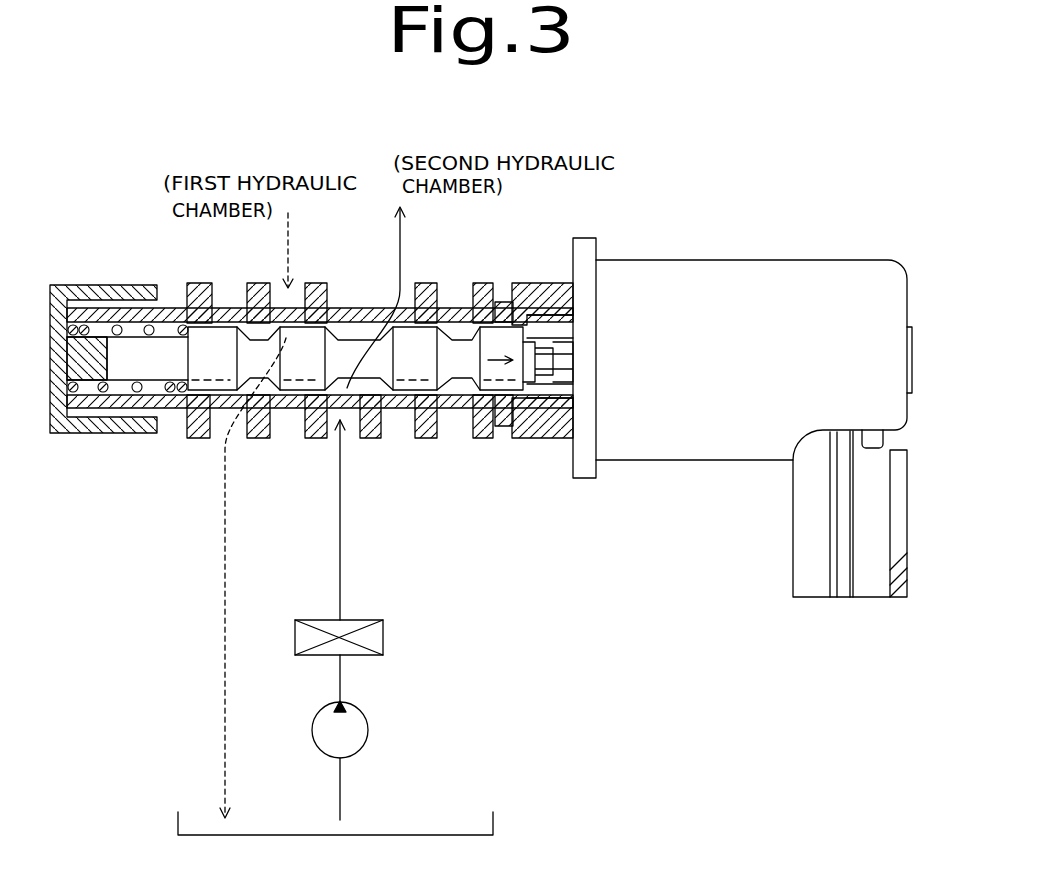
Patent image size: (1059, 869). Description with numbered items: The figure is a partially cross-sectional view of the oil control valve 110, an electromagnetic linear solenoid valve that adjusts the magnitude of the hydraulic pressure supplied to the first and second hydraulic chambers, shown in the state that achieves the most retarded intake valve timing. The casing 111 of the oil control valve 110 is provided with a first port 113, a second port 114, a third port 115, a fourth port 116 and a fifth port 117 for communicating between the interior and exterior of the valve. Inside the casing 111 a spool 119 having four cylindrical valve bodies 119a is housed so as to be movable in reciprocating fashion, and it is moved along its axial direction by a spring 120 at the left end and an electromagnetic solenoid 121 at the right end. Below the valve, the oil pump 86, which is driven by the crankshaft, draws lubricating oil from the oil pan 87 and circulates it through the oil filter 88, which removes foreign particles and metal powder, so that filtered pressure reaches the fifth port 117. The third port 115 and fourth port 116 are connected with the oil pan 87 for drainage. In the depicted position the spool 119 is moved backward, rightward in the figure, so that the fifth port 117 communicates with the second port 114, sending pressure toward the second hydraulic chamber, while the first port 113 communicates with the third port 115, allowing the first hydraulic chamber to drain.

The oil control valve 110 is at (88, 436).
The casing 111 is at (115, 285).
The first port 113 is at (273, 287).
The second port 114 is at (410, 287).
The third port 115 is at (212, 432).
The fourth port 116 is at (472, 432).
The fifth port 117 is at (330, 430).
The spool 119 is at (178, 362).
The cylindrical valve body 119a is at (205, 287).
The spring 120 is at (75, 285).
The electromagnetic solenoid 121 is at (692, 268).
The oil pump 86 is at (368, 730).
The oil pan 87 is at (494, 826).
The oil filter 88 is at (383, 640).